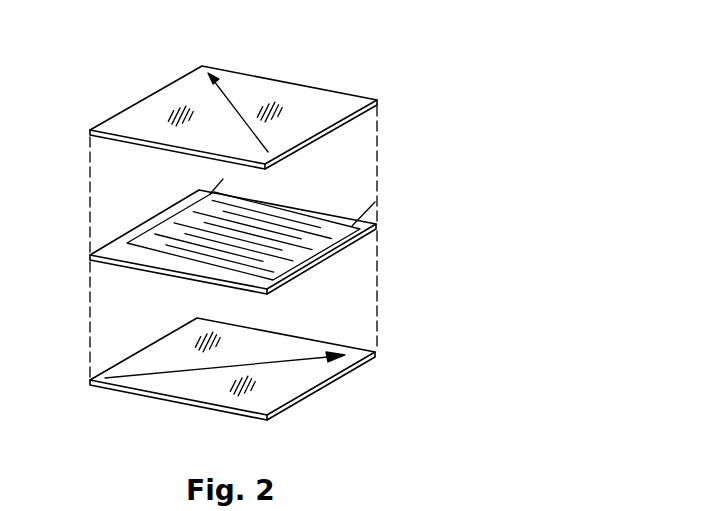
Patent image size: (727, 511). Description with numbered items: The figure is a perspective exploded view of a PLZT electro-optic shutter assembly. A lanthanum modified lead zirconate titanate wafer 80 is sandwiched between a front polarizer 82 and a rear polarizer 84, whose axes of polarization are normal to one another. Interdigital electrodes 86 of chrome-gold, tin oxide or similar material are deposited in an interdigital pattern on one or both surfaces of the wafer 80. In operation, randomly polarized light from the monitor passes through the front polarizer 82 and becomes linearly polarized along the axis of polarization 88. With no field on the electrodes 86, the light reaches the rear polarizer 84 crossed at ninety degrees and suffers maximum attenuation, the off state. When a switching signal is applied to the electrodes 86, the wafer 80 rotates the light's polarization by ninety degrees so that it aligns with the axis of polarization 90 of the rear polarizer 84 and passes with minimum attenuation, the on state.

The PLZT wafer 80 is at (318, 258).
The front polarizer 82 is at (143, 99).
The rear polarizer 84 is at (140, 350).
The interdigital electrodes 86 is at (160, 232).
The axis of polarization of the front polarizer 88 is at (243, 115).
The axis of polarization of the rear polarizer 90 is at (153, 374).